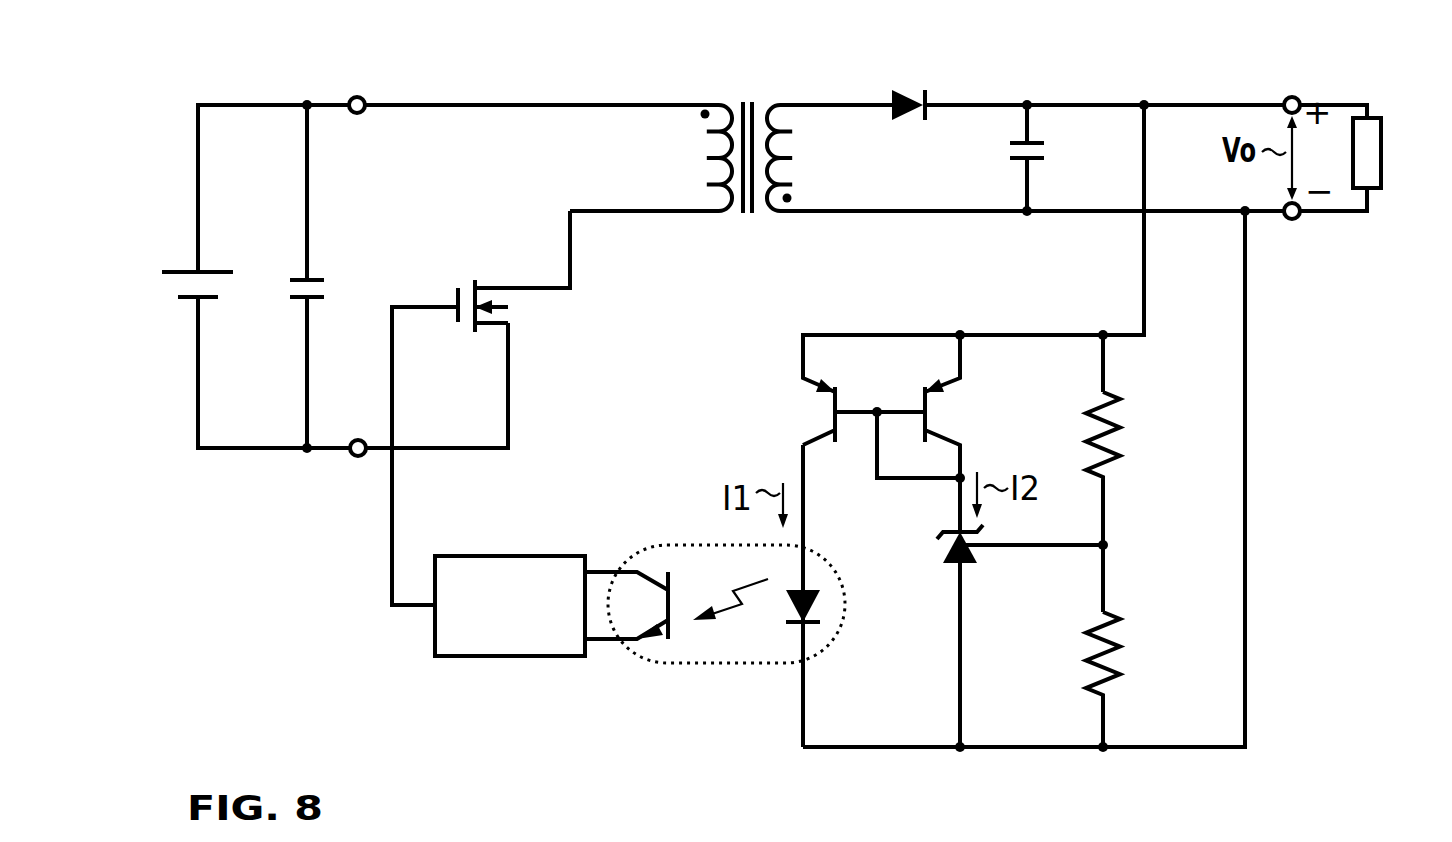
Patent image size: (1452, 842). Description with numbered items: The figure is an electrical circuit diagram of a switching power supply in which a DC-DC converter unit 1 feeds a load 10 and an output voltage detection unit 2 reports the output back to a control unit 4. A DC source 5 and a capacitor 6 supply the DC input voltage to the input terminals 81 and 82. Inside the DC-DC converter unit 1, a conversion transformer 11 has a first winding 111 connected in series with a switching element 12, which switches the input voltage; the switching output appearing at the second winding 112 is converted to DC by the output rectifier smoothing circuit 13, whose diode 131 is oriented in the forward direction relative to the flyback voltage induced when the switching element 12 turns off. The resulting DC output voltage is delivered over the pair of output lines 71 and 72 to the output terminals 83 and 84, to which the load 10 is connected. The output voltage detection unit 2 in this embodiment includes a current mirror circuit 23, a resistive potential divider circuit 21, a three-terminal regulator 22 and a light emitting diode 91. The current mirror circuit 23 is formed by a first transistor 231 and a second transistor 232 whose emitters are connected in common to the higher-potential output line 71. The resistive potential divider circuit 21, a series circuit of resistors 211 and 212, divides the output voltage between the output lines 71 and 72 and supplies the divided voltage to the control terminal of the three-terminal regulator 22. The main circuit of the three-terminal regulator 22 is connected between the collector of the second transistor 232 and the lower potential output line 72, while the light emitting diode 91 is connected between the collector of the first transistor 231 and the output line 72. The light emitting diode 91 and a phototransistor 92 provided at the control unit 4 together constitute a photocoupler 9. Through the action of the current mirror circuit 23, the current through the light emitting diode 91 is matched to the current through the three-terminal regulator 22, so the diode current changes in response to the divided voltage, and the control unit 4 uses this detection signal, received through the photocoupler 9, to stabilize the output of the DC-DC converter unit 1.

The DC-DC converter unit 1 is at (648, 354).
The output voltage detection unit 2 is at (1030, 428).
The control unit 4 is at (512, 657).
The DC source 5 is at (179, 288).
The capacitor 6 is at (322, 285).
The photocoupler 9 is at (742, 596).
The light emitting diode 91 is at (822, 618).
The phototransistor 92 is at (652, 568).
The load 10 is at (1375, 155).
The conversion transformer 11 is at (696, 125).
The first winding 111 is at (704, 160).
The second winding 112 is at (797, 160).
The switching element 12 is at (466, 280).
The output rectifier smoothing circuit 13 is at (1084, 123).
The diode 131 is at (904, 90).
The resistive potential divider circuit 21 is at (1205, 541).
The resistor 211 is at (1120, 418).
The resistor 212 is at (1120, 655).
The 3-terminal regulator 22 is at (948, 546).
The current mirror circuit 23 is at (940, 318).
The first transistor 231 is at (814, 412).
The second transistor 232 is at (948, 412).
The higher-potential output line 71 is at (1193, 96).
The lower potential output line 72 is at (1197, 216).
The input terminal 81 is at (357, 96).
The input terminal 82 is at (358, 458).
The output terminal 83 is at (1292, 94).
The output terminal 84 is at (1292, 220).